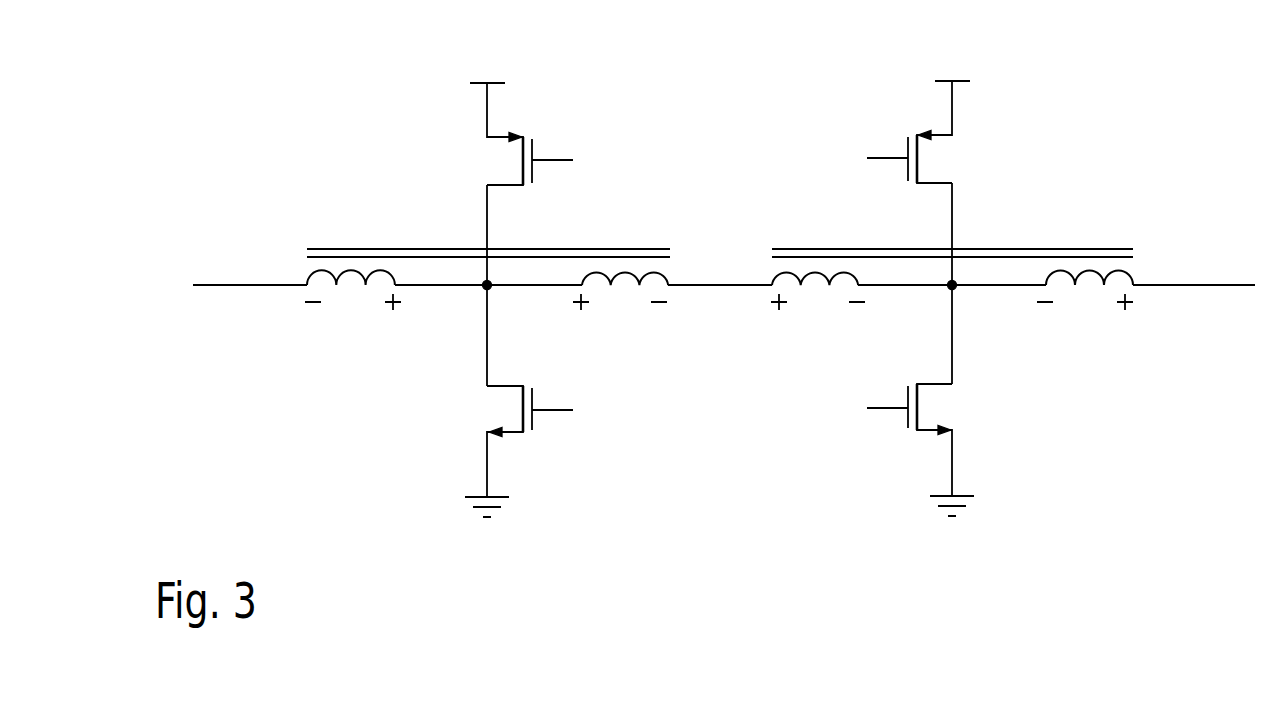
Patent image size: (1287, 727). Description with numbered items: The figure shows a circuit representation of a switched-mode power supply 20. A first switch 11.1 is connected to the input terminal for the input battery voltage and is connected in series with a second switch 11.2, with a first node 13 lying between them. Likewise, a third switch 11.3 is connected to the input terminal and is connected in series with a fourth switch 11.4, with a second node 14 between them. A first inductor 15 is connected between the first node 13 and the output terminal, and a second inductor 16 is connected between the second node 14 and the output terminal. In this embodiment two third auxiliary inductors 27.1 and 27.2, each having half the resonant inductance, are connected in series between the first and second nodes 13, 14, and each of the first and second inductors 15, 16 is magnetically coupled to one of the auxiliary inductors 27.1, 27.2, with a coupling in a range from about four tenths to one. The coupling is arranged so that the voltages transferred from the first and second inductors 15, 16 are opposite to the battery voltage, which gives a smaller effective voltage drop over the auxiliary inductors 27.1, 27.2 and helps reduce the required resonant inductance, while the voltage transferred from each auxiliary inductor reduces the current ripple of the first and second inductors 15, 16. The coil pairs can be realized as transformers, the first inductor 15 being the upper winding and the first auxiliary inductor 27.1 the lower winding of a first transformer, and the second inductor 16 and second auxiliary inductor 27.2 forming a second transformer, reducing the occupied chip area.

The switched-mode power supply 20 is at (1172, 84).
The first switch 11.1 is at (970, 152).
The second switch 11.2 is at (970, 415).
The third switch 11.3 is at (470, 154).
The fourth switch 11.4 is at (470, 418).
The first node 13 is at (956, 288).
The second node 14 is at (484, 288).
The first inductor 15 is at (1133, 273).
The second inductor 16 is at (307, 275).
The first auxiliary inductor 27.1 is at (816, 272).
The second auxiliary inductor 27.2 is at (623, 272).